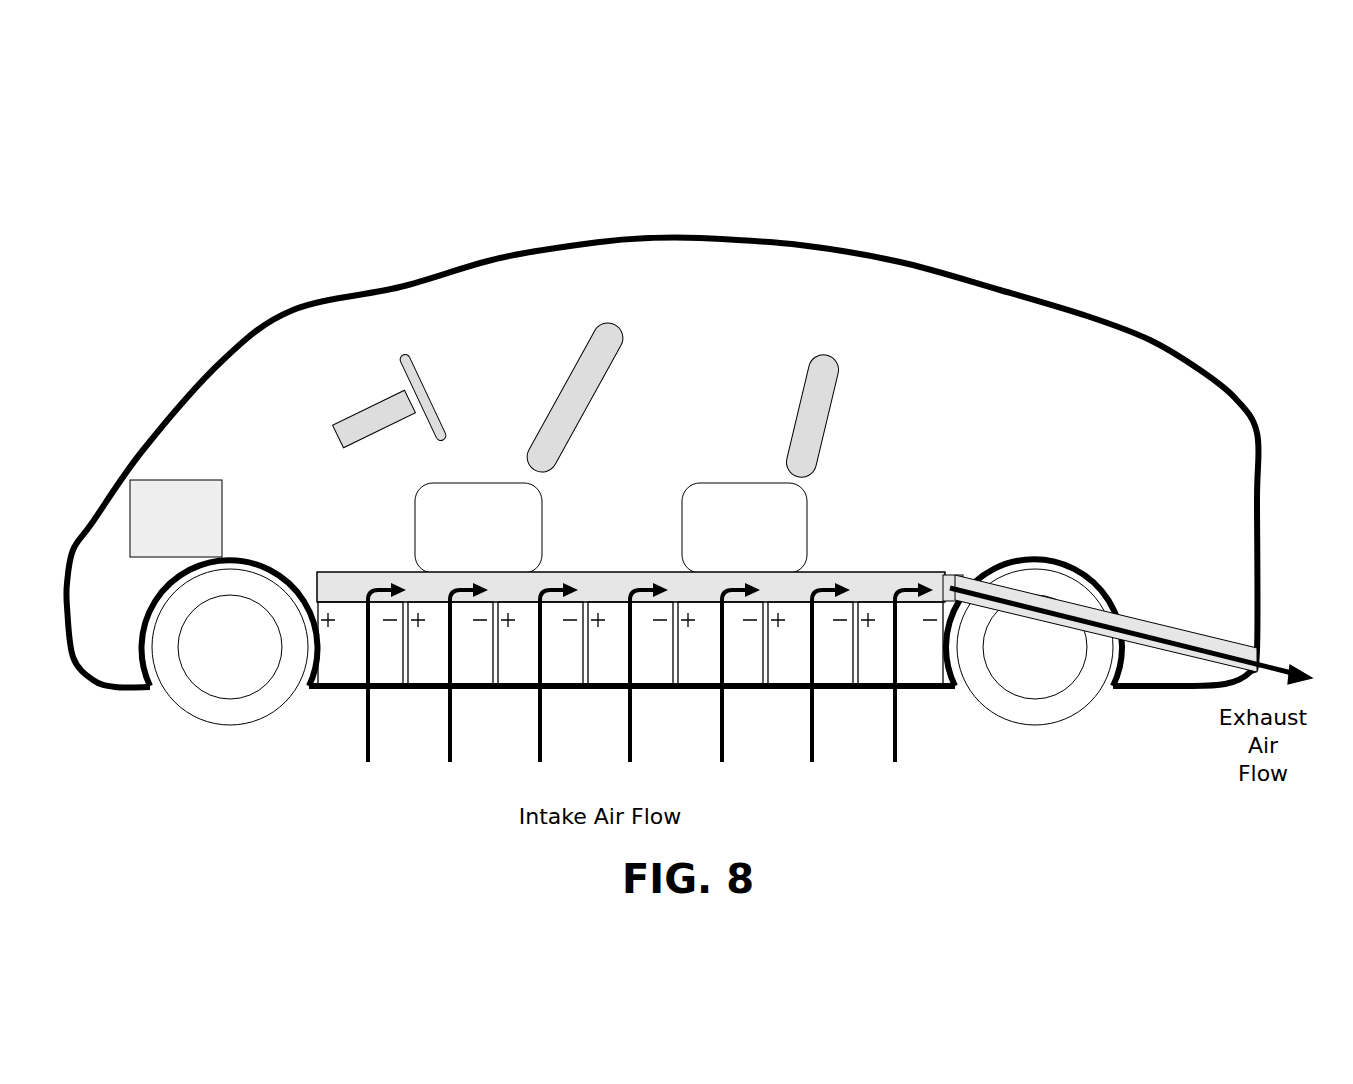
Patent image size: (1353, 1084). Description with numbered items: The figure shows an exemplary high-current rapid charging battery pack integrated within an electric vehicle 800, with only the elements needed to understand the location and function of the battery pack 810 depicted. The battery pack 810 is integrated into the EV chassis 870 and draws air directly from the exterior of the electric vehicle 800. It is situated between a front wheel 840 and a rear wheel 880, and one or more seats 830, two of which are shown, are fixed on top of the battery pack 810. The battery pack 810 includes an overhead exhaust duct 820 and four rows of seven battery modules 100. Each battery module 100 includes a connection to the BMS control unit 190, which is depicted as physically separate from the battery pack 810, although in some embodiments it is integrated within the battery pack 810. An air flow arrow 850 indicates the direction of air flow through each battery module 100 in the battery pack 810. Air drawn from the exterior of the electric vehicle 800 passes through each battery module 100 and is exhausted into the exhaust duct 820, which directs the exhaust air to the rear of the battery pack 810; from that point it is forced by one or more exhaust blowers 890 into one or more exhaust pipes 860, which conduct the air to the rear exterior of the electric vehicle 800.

The electric vehicle 800 is at (246, 298).
The BMS control unit 190 is at (178, 481).
The seat 830 is at (624, 314).
The battery pack 810 is at (830, 572).
The exhaust duct 820 is at (883, 585).
The exhaust blower 890 is at (962, 573).
The exhaust pipe 860 is at (1118, 612).
The EV chassis 870 is at (917, 692).
The rear wheel 880 is at (1033, 723).
The front wheel 840 is at (230, 725).
The air flow arrow 850 is at (640, 687).
The battery module 100 is at (868, 710).